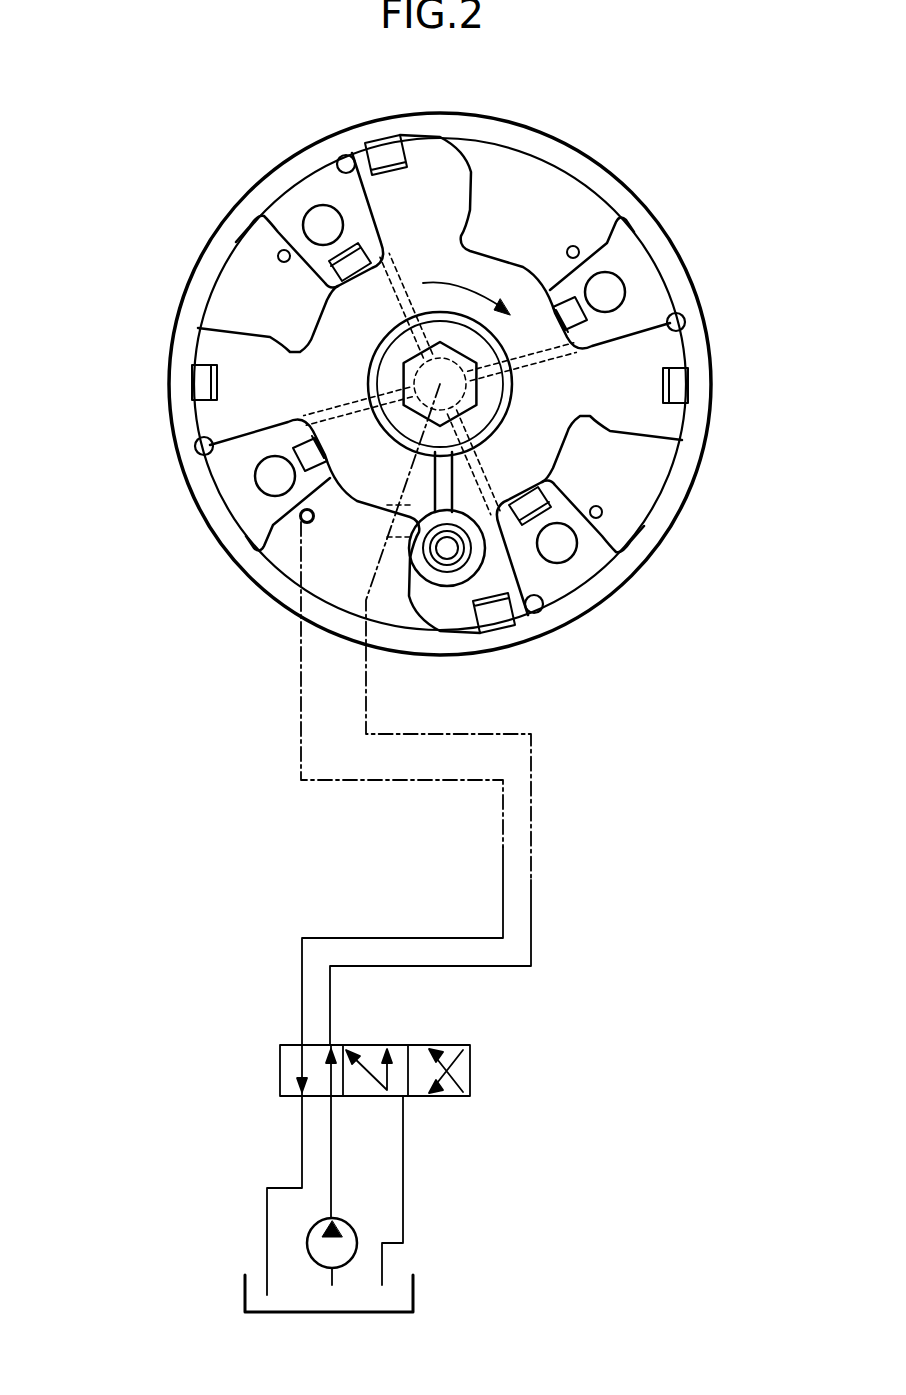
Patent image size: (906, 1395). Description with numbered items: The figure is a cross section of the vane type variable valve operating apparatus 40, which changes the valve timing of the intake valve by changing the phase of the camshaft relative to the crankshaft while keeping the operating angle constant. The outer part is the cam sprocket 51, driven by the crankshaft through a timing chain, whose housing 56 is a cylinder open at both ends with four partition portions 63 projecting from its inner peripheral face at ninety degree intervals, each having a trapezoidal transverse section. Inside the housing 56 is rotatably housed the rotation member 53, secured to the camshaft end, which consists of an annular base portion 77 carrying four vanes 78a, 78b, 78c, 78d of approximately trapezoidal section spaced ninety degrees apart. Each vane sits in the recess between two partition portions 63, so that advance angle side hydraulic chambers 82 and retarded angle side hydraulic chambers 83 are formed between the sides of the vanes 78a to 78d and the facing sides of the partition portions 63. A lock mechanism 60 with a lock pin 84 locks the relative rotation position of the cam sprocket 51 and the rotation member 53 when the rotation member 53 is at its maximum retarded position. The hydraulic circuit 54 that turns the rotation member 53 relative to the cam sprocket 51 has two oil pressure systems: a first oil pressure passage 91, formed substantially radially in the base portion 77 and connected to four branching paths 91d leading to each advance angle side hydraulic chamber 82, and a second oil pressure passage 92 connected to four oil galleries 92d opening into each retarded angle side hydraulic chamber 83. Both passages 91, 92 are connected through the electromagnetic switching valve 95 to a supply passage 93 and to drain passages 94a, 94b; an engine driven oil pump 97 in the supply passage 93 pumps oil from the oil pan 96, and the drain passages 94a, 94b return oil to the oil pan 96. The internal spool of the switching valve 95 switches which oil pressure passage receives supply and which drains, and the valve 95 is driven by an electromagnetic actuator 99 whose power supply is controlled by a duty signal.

The variable valve operating apparatus 40 is at (664, 100).
The cam sprocket 51 is at (544, 118).
The rotation member 53 is at (590, 437).
The hydraulic circuit 54 is at (531, 925).
The housing 56 is at (584, 141).
The lock mechanism 60 is at (489, 551).
The partition portion 63 is at (292, 224).
The base portion 77 is at (303, 522).
The first vane 78a is at (217, 416).
The second vane 78b is at (443, 170).
The third vane 78c is at (657, 422).
The fourth vane 78d is at (411, 608).
The advance angle side hydraulic chamber 82 is at (340, 158).
The retarded angle side hydraulic chamber 83 is at (418, 369).
The lock pin 84 is at (448, 590).
The first oil pressure passage 91 is at (533, 840).
The branching path 91d is at (400, 297).
The second oil pressure passage 92 is at (501, 840).
The oil gallery 92d is at (282, 252).
The supply passage 93 is at (333, 1134).
The drain passage 94a is at (301, 1134).
The drain passage 94b is at (405, 1170).
The electromagnetic switching valve 95 is at (381, 1044).
The oil pan 96 is at (243, 1288).
The oil pump 97 is at (340, 1221).
The electromagnetic actuator 99 is at (450, 1043).